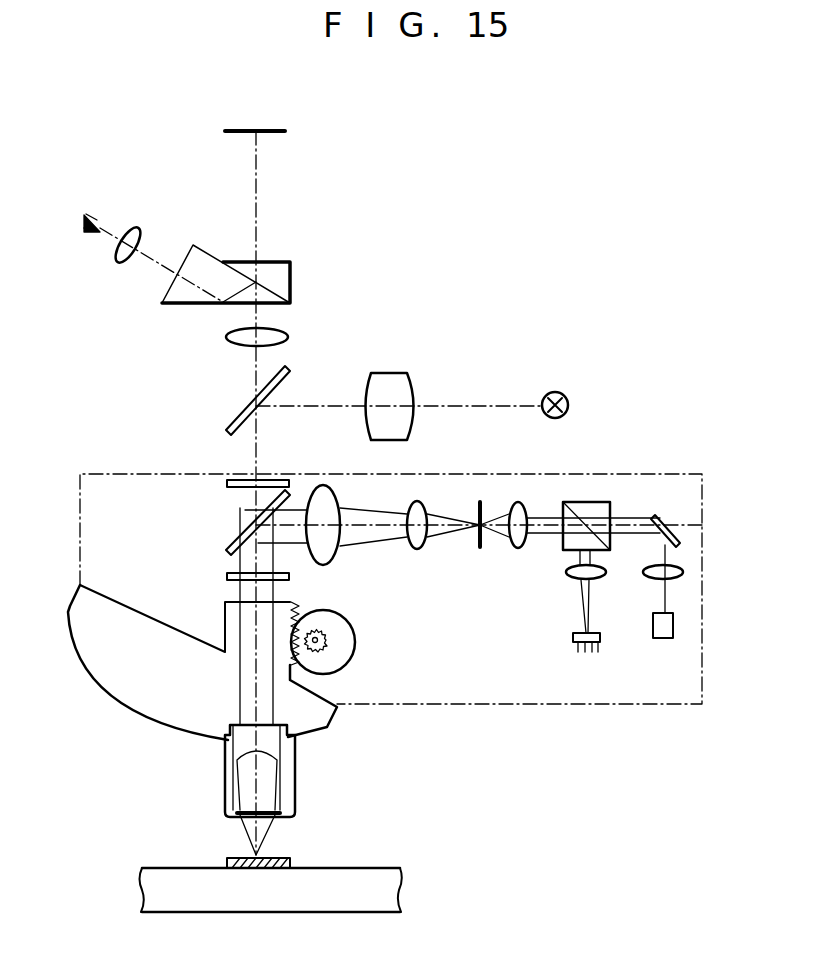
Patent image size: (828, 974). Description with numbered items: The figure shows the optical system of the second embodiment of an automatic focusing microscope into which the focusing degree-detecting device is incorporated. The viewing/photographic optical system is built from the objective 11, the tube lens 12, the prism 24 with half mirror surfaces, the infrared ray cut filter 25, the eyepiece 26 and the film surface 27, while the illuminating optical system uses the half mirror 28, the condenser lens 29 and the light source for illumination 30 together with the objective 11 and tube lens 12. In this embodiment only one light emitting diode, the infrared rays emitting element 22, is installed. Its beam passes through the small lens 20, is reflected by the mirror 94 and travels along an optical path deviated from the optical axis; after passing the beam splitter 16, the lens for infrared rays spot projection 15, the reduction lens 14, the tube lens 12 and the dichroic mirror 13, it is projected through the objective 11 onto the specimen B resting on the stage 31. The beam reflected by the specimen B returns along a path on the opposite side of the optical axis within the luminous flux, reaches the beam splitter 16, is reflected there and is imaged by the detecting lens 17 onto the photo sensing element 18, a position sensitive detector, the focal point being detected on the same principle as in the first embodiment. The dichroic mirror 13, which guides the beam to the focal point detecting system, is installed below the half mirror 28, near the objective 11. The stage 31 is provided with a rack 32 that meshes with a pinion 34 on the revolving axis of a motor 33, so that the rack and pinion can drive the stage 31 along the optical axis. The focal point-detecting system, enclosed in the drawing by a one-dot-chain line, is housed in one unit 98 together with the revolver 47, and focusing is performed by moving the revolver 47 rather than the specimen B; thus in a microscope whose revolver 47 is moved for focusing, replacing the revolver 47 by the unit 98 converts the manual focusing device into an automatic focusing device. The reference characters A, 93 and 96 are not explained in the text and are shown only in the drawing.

The objective 11 is at (275, 797).
The tube lens 12 is at (228, 337).
The dichroic mirror 13 is at (228, 540).
The reduction lens 14 is at (412, 505).
The lens for infrared rays spot projection 15 is at (515, 512).
The beam splitter 16 is at (577, 503).
The detecting lens 17 is at (575, 577).
The photo sensing element 18 is at (600, 641).
The small lens 20 is at (660, 578).
The infrared rays emitting element 22 is at (663, 640).
The prism 24 is at (178, 295).
The infrared ray cut filter 25 is at (227, 484).
The eyepiece 26 is at (135, 238).
The film surface 27 is at (268, 135).
The half mirror 28 is at (288, 371).
The condenser lens 29 is at (384, 388).
The light source for illumination 30 is at (553, 391).
The stage 31 is at (382, 888).
The rack 32 is at (300, 606).
The motor 33 is at (342, 633).
The pinion 34 is at (327, 650).
The revolver 47 is at (118, 670).
The glass plate 93 is at (227, 577).
The mirror 94 is at (665, 520).
The light beam 96 is at (383, 530).
The unit 98 is at (605, 704).
The aperture A is at (482, 540).
The specimen B is at (290, 858).